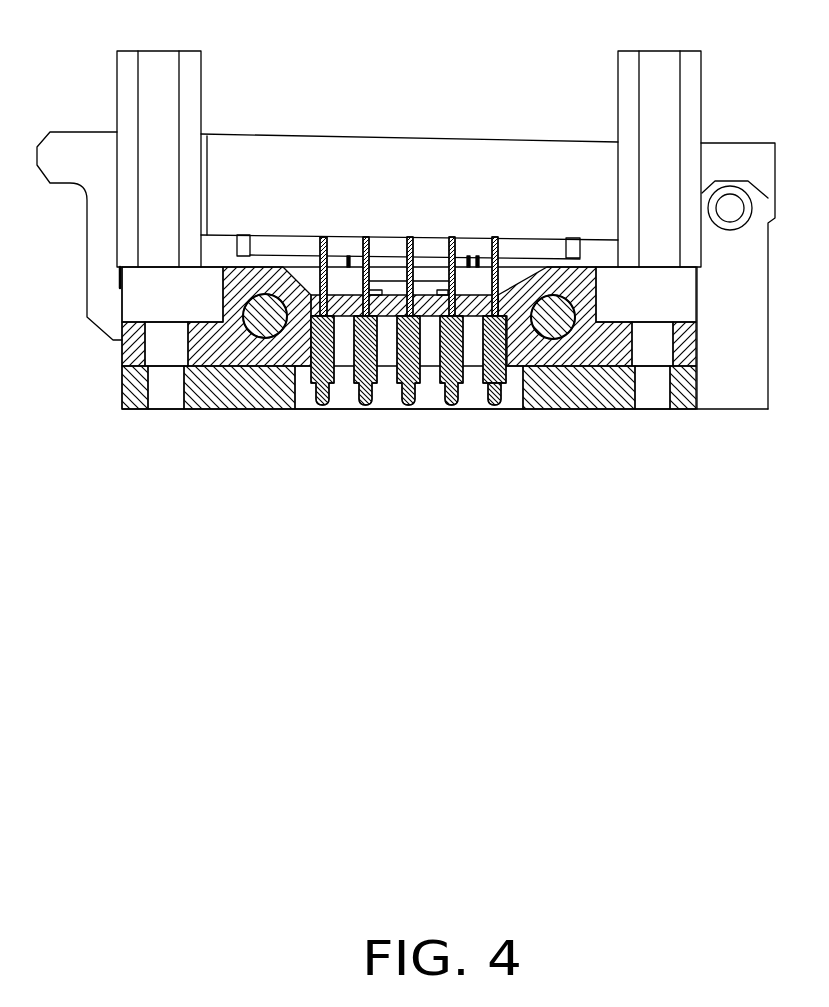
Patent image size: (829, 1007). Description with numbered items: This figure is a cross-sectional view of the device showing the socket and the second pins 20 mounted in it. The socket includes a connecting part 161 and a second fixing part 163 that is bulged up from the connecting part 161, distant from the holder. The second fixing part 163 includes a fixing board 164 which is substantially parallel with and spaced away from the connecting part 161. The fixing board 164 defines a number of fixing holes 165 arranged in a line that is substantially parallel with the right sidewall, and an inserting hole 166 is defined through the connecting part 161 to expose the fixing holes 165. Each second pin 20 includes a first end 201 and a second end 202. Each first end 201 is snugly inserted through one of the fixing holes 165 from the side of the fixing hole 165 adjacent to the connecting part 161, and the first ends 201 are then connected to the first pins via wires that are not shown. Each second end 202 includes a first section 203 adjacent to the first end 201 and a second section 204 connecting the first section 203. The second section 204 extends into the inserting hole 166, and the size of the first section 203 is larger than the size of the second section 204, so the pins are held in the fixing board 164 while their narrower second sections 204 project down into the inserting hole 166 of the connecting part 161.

The second pin 20 is at (451, 406).
The connecting part 161 is at (213, 392).
The second fixing part 163 is at (593, 347).
The fixing board 164 is at (343, 303).
The fixing hole 165 is at (307, 318).
The inserting hole 166 is at (383, 393).
The first end 201 is at (557, 337).
The second end 202 is at (427, 381).
The first section 203 is at (489, 350).
The second section 204 is at (516, 431).